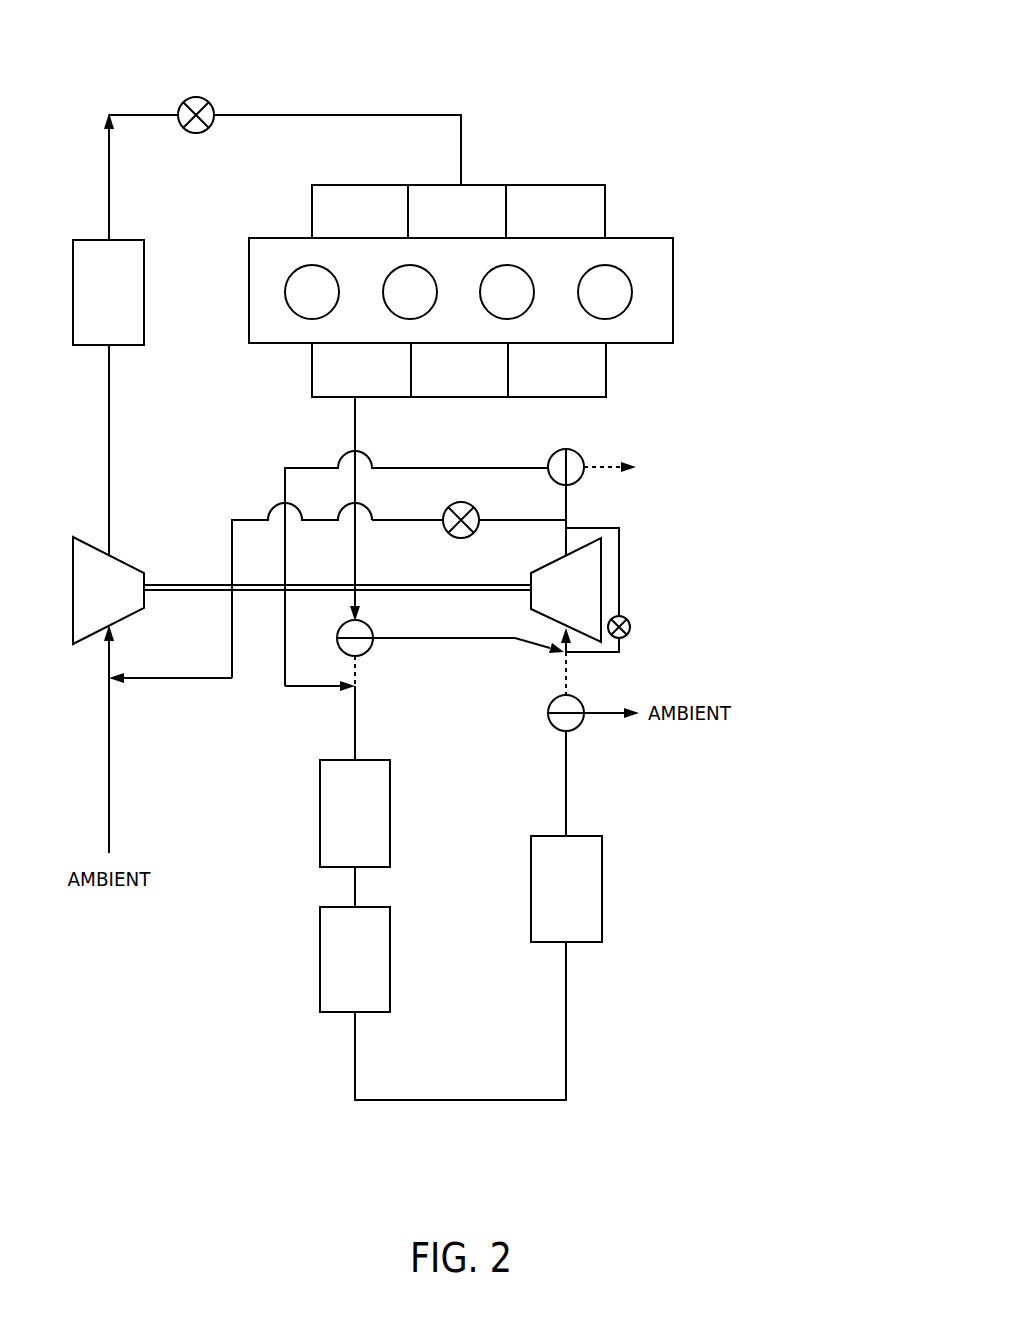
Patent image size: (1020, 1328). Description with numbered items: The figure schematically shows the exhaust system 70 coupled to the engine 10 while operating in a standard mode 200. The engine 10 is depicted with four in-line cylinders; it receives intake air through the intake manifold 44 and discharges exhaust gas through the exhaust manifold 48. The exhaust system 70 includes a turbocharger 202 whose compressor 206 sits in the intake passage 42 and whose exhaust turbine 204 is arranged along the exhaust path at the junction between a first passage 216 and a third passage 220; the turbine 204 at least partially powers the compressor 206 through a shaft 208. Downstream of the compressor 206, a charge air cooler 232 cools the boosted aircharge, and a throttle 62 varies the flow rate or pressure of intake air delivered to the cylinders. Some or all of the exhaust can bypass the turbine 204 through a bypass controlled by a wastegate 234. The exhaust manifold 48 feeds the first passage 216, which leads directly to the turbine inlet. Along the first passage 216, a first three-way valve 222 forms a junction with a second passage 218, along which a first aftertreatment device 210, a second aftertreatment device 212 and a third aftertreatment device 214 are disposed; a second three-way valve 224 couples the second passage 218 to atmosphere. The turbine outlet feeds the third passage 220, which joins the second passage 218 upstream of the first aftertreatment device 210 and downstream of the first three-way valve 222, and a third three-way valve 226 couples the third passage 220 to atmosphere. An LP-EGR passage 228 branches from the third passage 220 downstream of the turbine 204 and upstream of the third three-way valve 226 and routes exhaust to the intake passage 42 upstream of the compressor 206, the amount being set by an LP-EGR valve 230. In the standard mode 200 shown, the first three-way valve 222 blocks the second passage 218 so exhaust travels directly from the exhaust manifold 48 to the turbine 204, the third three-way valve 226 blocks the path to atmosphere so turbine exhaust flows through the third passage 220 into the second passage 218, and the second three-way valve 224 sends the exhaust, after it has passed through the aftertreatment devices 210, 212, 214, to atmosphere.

The engine 10 is at (655, 244).
The intake passage 42 is at (110, 420).
The intake manifold 44 is at (557, 185).
The exhaust manifold 48 is at (470, 398).
The throttle 62 is at (198, 97).
The exhaust system 70 is at (737, 392).
The standard mode 200 is at (737, 38).
The turbocharger 202 is at (645, 508).
The exhaust turbine 204 is at (566, 595).
The compressor 206 is at (108, 590).
The shaft 208 is at (427, 583).
The first aftertreatment device 210 is at (355, 813).
The second aftertreatment device 212 is at (355, 959).
The third aftertreatment device 214 is at (566, 889).
The first passage 216 is at (356, 437).
The second passage 218 is at (357, 735).
The third passage 220 is at (305, 467).
The first three-way valve 222 is at (368, 628).
The second three-way valve 224 is at (578, 700).
The third three-way valve 226 is at (575, 455).
The LP-EGR passage 228 is at (250, 519).
The LP-EGR valve 230 is at (458, 503).
The charge air cooler 232 is at (108, 292).
The wastegate 234 is at (627, 617).